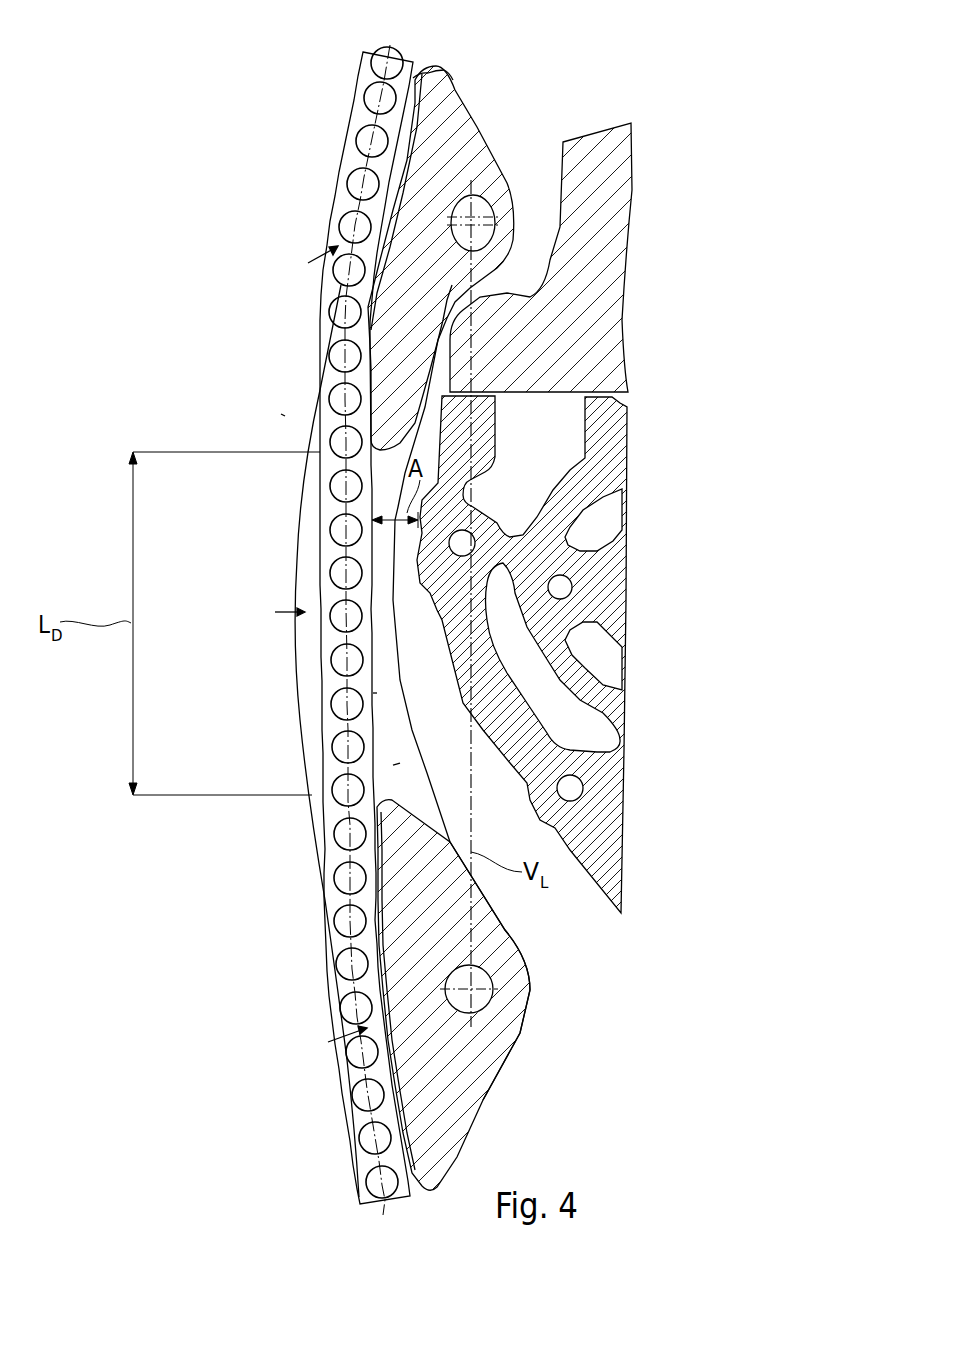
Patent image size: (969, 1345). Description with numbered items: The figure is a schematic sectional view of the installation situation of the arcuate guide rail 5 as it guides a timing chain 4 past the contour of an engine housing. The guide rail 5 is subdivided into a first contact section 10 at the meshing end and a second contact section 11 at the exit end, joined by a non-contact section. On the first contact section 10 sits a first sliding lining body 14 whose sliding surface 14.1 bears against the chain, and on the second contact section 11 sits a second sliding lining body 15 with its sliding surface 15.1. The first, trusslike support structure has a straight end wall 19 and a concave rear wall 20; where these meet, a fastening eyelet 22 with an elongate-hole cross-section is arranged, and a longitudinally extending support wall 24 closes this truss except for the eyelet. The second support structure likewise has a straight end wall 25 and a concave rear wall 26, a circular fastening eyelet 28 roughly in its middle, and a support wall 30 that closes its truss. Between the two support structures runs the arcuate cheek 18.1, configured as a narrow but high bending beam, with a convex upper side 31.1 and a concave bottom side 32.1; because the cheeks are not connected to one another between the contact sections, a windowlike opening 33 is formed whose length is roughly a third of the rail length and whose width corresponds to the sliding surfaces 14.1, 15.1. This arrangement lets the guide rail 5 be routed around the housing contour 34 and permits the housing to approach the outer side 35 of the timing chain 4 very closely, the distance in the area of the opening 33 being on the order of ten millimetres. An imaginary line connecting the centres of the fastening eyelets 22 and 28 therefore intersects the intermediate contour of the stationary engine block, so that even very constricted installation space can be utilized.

The timing chain 4 is at (360, 118).
The guide rail 5 is at (286, 417).
The first contact section 10 is at (403, 214).
The second contact section 11 is at (418, 1019).
The first sliding lining body 14 is at (415, 78).
The sliding surface 14.1 is at (390, 180).
The second sliding lining body 15 is at (425, 1190).
The sliding surface 15.1 is at (390, 1080).
The cheek 18.1 is at (302, 537).
The end wall 19 is at (452, 84).
The rear wall 20 is at (450, 312).
The fastening eyelet 22 is at (483, 207).
The support wall 24 is at (462, 132).
The end wall 25 is at (477, 1130).
The rear wall 26 is at (510, 932).
The fastening eyelet 28 is at (482, 977).
The support wall 30 is at (470, 1068).
The convex upper side 31.1 is at (291, 693).
The concave bottom side 32.1 is at (437, 787).
The windowlike opening 33 is at (400, 763).
The housing contour 34 is at (437, 600).
The outer side 35 is at (382, 693).